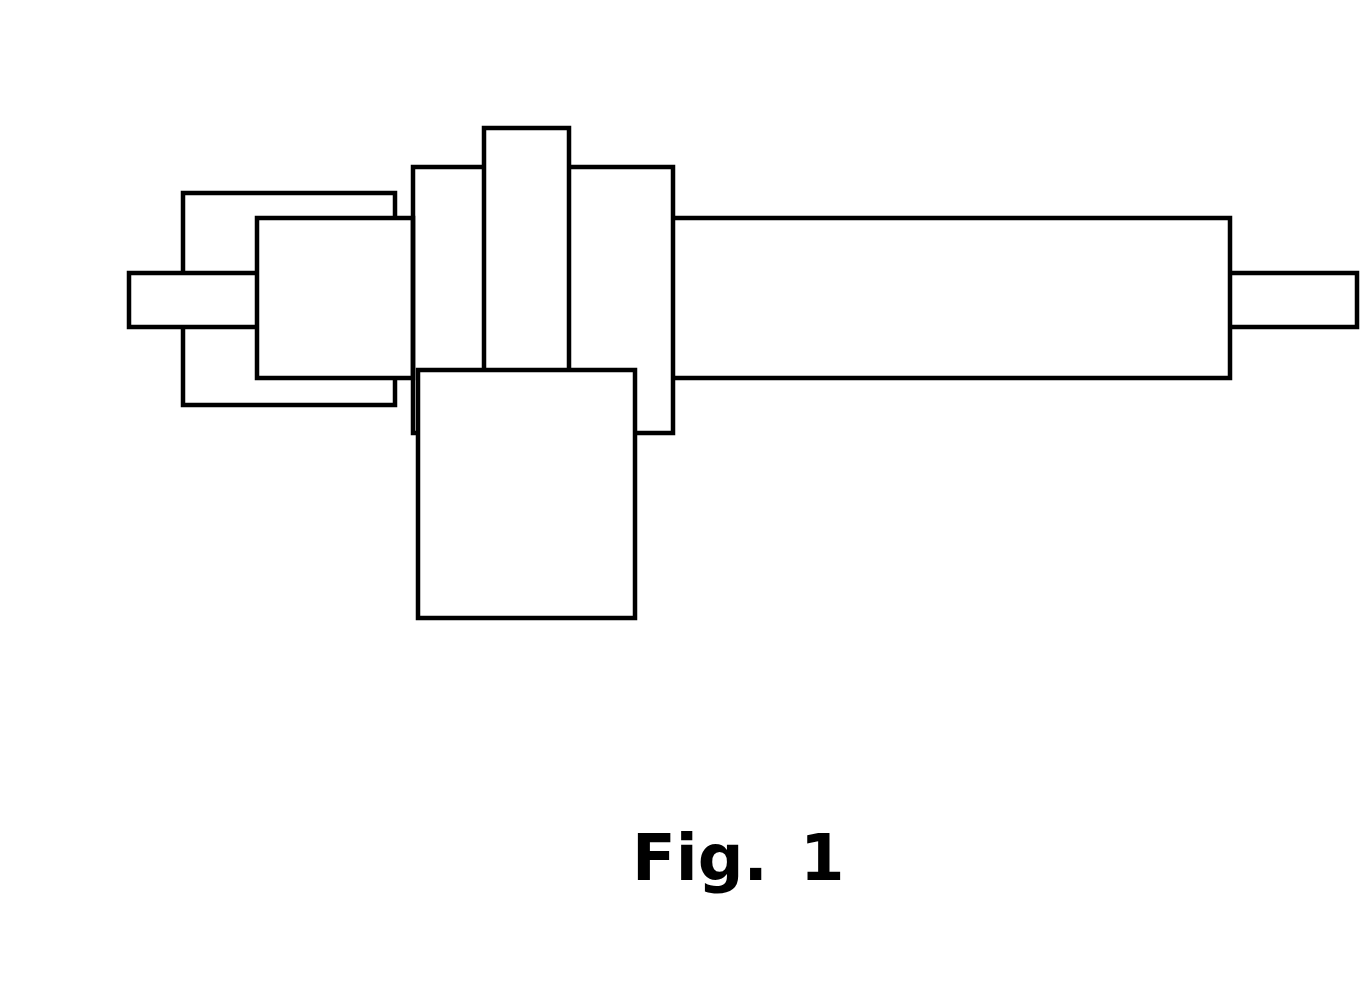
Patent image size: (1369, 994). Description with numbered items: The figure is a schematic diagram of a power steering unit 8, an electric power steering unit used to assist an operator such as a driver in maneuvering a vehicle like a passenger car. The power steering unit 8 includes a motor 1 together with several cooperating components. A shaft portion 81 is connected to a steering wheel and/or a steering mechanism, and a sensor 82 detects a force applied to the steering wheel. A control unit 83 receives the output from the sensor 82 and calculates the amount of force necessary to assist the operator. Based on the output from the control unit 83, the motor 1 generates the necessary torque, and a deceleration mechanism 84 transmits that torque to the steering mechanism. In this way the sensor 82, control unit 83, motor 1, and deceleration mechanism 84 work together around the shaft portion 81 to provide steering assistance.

The power steering unit 8 is at (184, 80).
The shaft portion 81 is at (1147, 218).
The sensor 82 is at (635, 165).
The control unit 83 is at (242, 405).
The deceleration mechanism 84 is at (523, 127).
The motor 1 is at (637, 494).